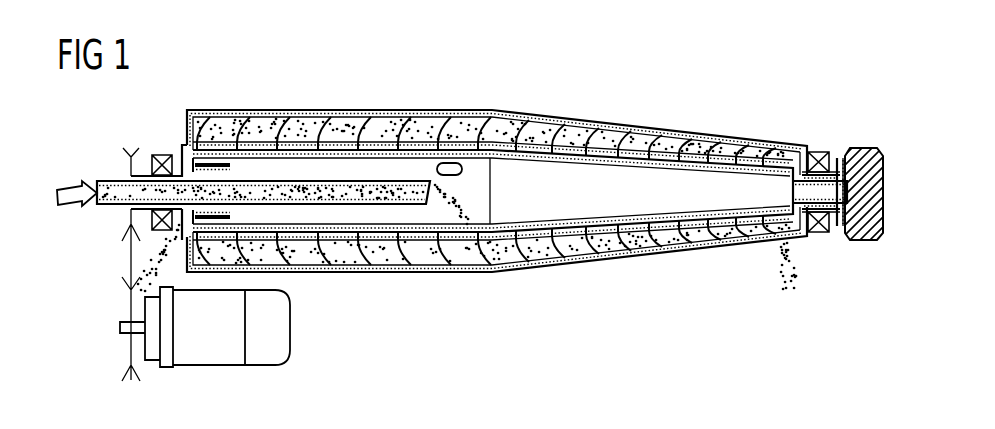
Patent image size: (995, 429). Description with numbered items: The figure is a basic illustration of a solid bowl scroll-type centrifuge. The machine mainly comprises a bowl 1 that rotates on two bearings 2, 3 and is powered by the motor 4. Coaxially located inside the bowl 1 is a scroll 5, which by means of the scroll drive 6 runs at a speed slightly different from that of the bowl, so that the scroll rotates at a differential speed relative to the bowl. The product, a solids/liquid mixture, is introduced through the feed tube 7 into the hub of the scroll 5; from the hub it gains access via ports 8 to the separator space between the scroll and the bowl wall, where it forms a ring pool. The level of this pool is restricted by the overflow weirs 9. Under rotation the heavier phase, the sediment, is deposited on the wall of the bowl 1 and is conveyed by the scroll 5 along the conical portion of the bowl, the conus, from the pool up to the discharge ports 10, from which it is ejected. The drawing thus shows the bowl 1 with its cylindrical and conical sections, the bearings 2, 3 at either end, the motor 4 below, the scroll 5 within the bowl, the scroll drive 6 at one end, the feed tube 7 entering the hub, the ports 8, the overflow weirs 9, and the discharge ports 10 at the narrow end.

The bowl 1 is at (197, 110).
The bearing 2 is at (161, 154).
The bearing 3 is at (816, 151).
The motor 4 is at (273, 323).
The scroll 5 is at (593, 121).
The scroll drive 6 is at (861, 147).
The feed tube 7 is at (109, 181).
The ports 8 is at (462, 170).
The overflow weirs 9 is at (184, 141).
The discharge ports 10 is at (777, 270).